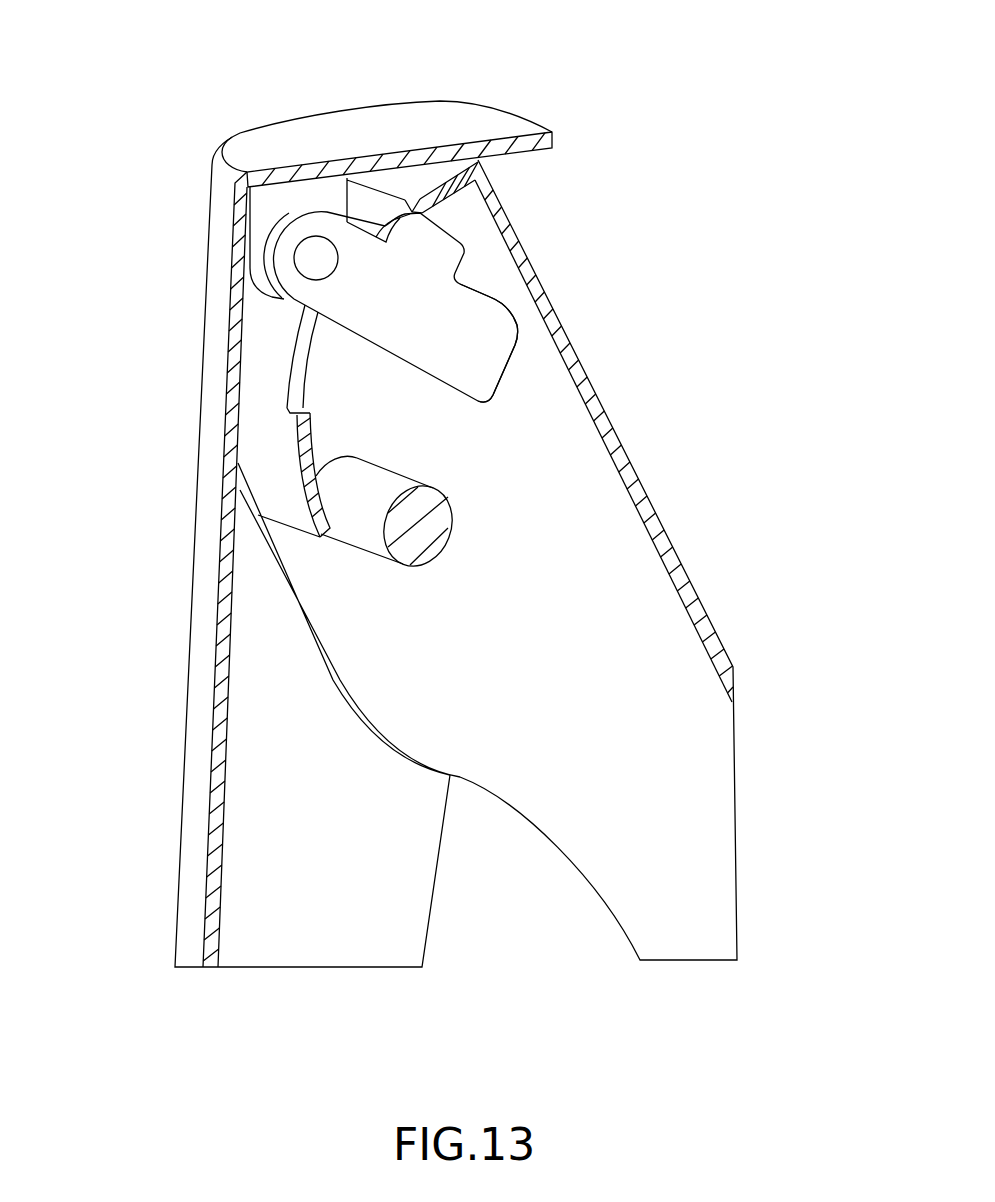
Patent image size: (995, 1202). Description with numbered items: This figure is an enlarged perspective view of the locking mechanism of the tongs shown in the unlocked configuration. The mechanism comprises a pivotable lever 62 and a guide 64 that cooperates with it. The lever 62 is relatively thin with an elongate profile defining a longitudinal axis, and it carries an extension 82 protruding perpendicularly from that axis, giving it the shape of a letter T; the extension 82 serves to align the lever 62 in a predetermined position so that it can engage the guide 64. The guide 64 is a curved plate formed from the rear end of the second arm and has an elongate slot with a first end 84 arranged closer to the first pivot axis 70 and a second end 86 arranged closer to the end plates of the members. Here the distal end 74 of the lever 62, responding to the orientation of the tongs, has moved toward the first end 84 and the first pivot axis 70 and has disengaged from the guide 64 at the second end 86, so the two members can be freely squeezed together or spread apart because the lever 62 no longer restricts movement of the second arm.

The lever 62 is at (367, 300).
The guide 64 is at (492, 203).
The first pivot axis 70 is at (398, 527).
The distal end 74 is at (507, 368).
The extension 82 is at (417, 260).
The first end 84 is at (287, 420).
The second end 86 is at (412, 203).